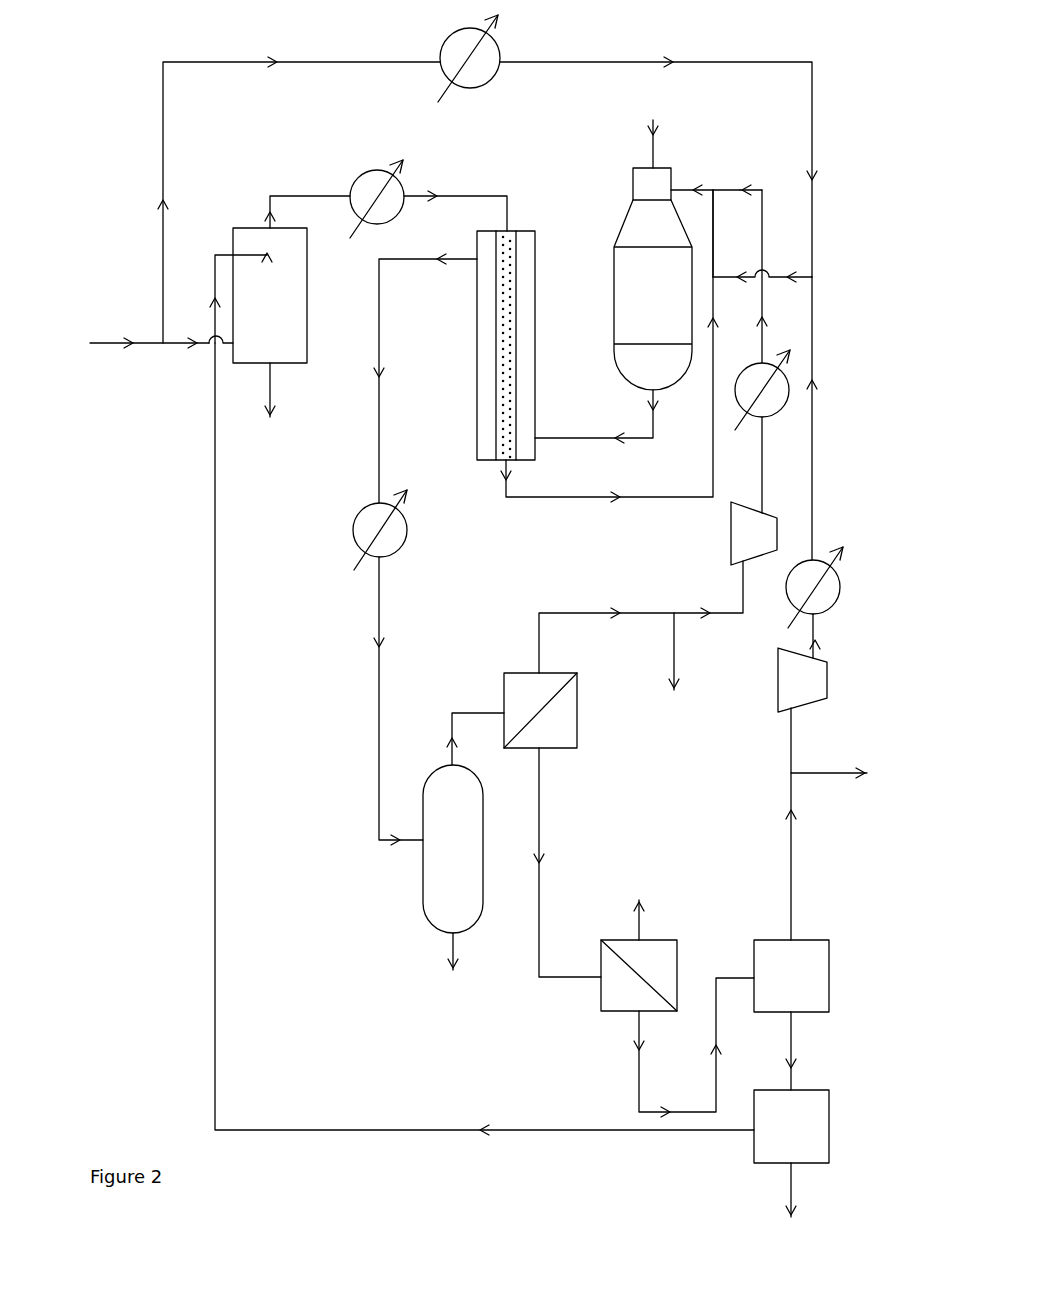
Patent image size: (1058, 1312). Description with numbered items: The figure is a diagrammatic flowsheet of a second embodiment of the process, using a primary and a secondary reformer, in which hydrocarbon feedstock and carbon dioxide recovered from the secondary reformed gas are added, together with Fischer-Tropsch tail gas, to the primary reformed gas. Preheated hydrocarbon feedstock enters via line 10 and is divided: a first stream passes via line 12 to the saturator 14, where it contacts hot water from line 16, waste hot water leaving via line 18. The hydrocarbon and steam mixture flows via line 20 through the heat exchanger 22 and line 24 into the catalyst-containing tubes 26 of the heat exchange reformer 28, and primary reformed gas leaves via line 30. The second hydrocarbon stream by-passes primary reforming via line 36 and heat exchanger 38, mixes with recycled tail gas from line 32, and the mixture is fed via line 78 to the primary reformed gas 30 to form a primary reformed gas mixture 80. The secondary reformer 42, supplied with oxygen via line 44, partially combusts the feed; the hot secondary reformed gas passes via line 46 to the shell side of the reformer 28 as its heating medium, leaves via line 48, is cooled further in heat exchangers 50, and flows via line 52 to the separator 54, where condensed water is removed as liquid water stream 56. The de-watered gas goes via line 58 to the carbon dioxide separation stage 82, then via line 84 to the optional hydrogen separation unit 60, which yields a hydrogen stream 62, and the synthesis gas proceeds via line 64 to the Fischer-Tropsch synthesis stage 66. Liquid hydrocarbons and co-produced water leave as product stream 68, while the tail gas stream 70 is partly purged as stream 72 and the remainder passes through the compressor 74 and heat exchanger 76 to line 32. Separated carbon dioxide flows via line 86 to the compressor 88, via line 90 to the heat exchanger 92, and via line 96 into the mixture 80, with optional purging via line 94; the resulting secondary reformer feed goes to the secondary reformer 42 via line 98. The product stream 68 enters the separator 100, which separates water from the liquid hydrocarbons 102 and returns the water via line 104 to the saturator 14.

The line 10 is at (115, 343).
The line 12 is at (180, 347).
The saturator 14 is at (307, 262).
The line 16 is at (220, 255).
The line 18 is at (273, 380).
The line 20 is at (300, 196).
The heat exchanger 22 is at (400, 185).
The line 24 is at (490, 196).
The catalyst-containing tubes 26 is at (497, 322).
The heat exchange reformer 28 is at (477, 370).
The line 30 is at (506, 492).
The line 32 is at (815, 432).
The line 36 is at (363, 62).
The heat exchanger 38 is at (475, 78).
The secondary reformer 42 is at (614, 272).
The line 44 is at (653, 150).
The line 46 is at (630, 438).
The line 48 is at (410, 259).
The heat exchangers 50 is at (393, 533).
The line 52 is at (380, 677).
The separator 54 is at (483, 822).
The liquid water stream 56 is at (452, 948).
The line 58 is at (483, 713).
The hydrogen separation unit 60 is at (628, 1012).
The hydrogen stream 62 is at (636, 925).
The line 64 is at (639, 1090).
The Fischer-Tropsch synthesis stage 66 is at (754, 958).
The product stream 68 is at (791, 1045).
The tail gas stream 70 is at (791, 863).
The purge stream 72 is at (828, 773).
The compressor 74 is at (827, 680).
The heat exchanger 76 is at (825, 562).
The line 78 is at (810, 273).
The primary reformed gas mixture 80 is at (713, 247).
The carbon dioxide separation stage 82 is at (577, 700).
The line 84 is at (541, 830).
The line 86 is at (580, 613).
The compressor 88 is at (730, 552).
The line 90 is at (765, 478).
The heat exchanger 92 is at (768, 365).
The line 94 is at (674, 660).
The line 96 is at (762, 186).
The line 98 is at (688, 190).
The separator 100 is at (829, 1125).
The synthesised liquid hydrocarbons 102 is at (800, 1185).
The line 104 is at (510, 1130).